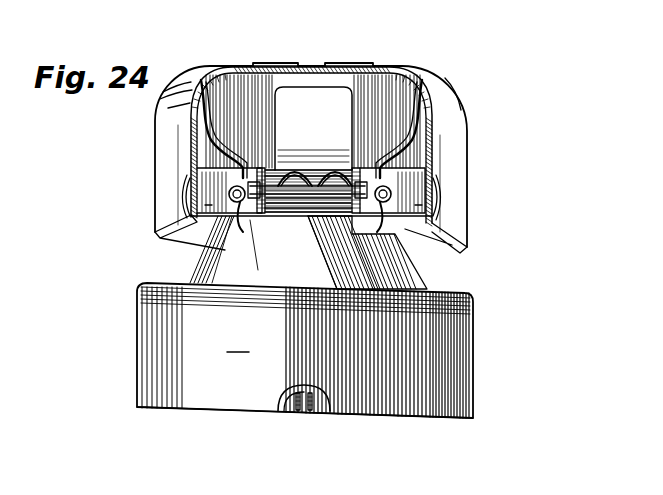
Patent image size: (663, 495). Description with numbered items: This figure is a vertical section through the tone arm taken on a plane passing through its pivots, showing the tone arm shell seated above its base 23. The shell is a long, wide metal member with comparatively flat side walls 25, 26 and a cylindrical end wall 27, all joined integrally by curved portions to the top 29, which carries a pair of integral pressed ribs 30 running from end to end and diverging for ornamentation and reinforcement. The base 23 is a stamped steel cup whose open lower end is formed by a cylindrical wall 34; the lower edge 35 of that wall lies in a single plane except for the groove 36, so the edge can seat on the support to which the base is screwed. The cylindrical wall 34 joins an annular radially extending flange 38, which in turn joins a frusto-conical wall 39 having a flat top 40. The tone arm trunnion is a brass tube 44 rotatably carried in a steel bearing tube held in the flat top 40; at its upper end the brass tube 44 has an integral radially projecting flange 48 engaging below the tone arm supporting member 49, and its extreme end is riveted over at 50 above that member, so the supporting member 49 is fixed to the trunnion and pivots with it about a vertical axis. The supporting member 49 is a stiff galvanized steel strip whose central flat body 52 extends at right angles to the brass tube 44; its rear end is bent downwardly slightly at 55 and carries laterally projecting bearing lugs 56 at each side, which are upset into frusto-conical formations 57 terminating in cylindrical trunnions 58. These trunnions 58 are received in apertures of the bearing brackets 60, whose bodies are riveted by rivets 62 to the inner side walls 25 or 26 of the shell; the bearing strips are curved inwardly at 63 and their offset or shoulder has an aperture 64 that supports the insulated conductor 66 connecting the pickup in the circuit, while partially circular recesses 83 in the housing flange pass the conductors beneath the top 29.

The base 23 is at (139, 345).
The side wall 25 is at (456, 176).
The side wall 26 is at (166, 170).
The cylindrical end wall 27 is at (455, 93).
The top 29 is at (318, 64).
The pressed ribs 30 is at (262, 64).
The cylindrical wall 34 is at (237, 342).
The lower edge 35 is at (200, 411).
The groove 36 is at (300, 412).
The annular radially extending flange 38 is at (161, 283).
The frusto-conical wall 39 is at (276, 166).
The flat top 40 is at (347, 184).
The brass tube 44 is at (300, 390).
The radially projecting flange 48 is at (301, 210).
The tone arm supporting member 49 is at (278, 158).
The riveted end 50 is at (332, 186).
The central flat body 52 is at (301, 176).
The downwardly bent end 55 is at (334, 184).
The bearing lugs 56 is at (262, 244).
The frusto-conical formations 57 is at (297, 64).
The cylindrical trunnions 58 is at (311, 197).
The bearing brackets 60 is at (206, 198).
The rivets 62 is at (186, 186).
The inwardly curved portion 63 is at (200, 133).
The aperture 64 is at (208, 180).
The insulated conductor 66 is at (433, 140).
The partially circular recesses 83 is at (233, 71).